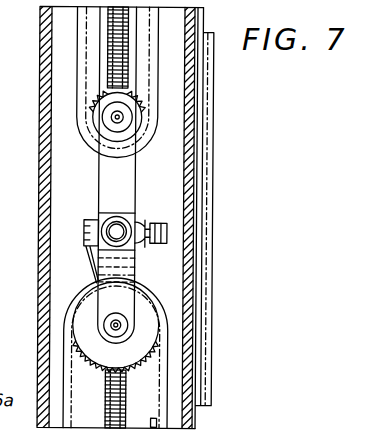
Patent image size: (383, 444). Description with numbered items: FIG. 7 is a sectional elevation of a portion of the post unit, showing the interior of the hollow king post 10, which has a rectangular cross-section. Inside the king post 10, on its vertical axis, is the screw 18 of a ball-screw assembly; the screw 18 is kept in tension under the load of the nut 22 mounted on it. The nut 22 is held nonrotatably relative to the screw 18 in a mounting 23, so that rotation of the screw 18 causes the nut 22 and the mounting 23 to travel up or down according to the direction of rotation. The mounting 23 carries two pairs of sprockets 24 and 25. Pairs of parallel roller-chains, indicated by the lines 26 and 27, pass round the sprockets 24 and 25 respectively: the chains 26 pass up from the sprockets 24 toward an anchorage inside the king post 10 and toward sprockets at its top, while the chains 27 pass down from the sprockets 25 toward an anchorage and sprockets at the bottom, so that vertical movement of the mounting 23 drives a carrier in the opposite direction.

The king post 10 is at (44, 113).
The screw 18 is at (122, 72).
The nut 22 is at (108, 211).
The mounting 23 is at (100, 160).
The sprockets 24 is at (142, 97).
The sprockets 25 is at (112, 356).
The roller-chains 26 is at (82, 80).
The roller-chains 27 is at (209, 92).